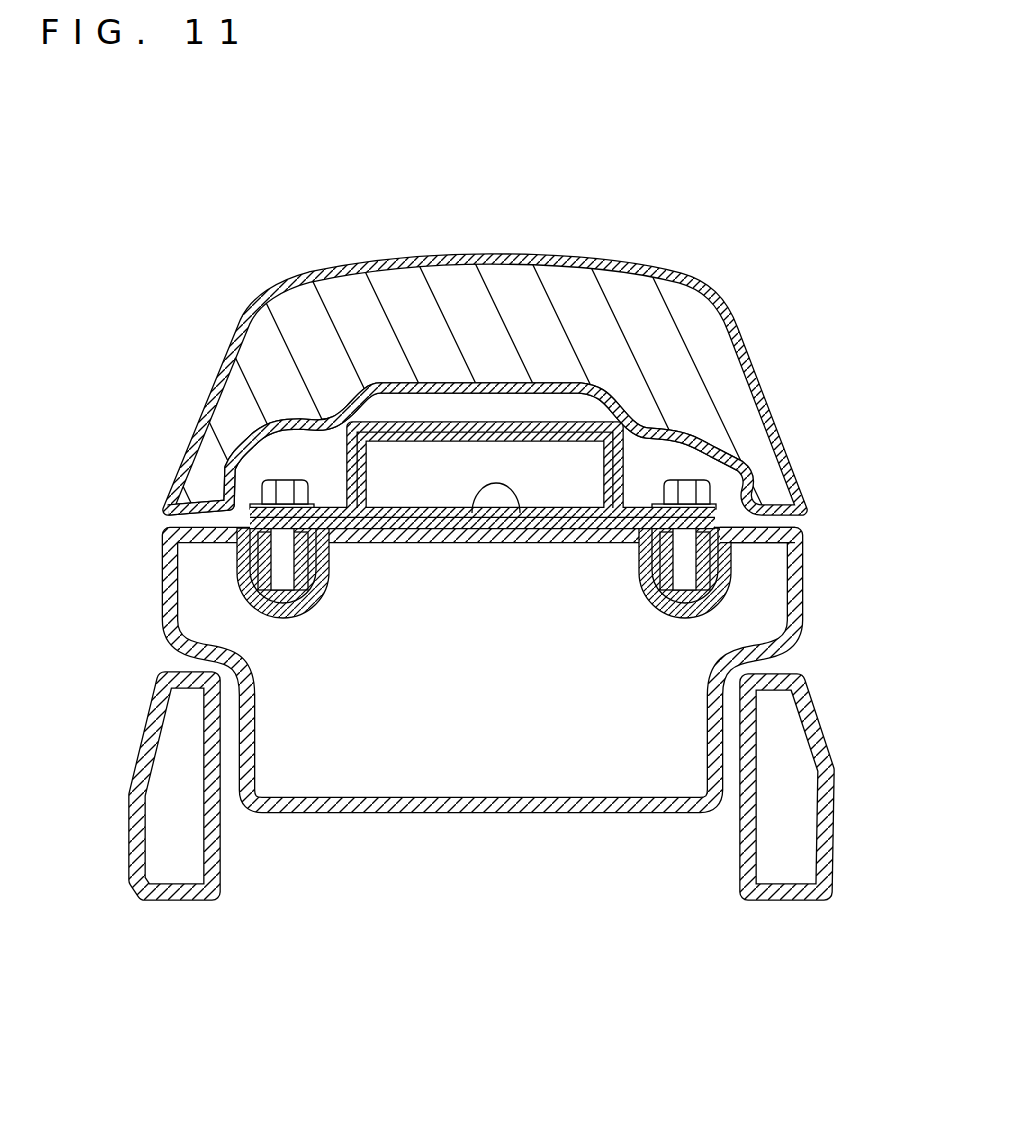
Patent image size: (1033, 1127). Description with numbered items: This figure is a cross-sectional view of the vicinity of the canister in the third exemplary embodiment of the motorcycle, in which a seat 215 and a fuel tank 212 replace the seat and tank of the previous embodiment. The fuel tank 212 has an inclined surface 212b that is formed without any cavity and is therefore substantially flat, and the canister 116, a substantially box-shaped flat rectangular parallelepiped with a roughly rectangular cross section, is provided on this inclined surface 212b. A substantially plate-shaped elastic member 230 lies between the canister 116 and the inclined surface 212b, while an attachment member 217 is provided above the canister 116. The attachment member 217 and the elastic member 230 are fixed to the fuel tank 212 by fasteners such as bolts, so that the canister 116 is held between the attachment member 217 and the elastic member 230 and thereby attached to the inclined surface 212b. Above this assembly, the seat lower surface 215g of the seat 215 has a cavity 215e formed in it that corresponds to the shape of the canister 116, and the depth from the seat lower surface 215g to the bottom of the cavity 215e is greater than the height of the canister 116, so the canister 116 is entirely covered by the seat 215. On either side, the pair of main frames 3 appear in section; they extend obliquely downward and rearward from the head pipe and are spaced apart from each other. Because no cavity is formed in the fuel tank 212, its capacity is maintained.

The seat 215 is at (427, 252).
The cavity 215e is at (513, 383).
The seat lower surface 215g is at (187, 518).
The attachment member 217 is at (565, 424).
The canister 116 is at (622, 462).
The fuel tank 212 is at (445, 846).
The inclined surface 212b is at (780, 524).
The elastic member 230 is at (473, 508).
The main frames 3 is at (172, 900).